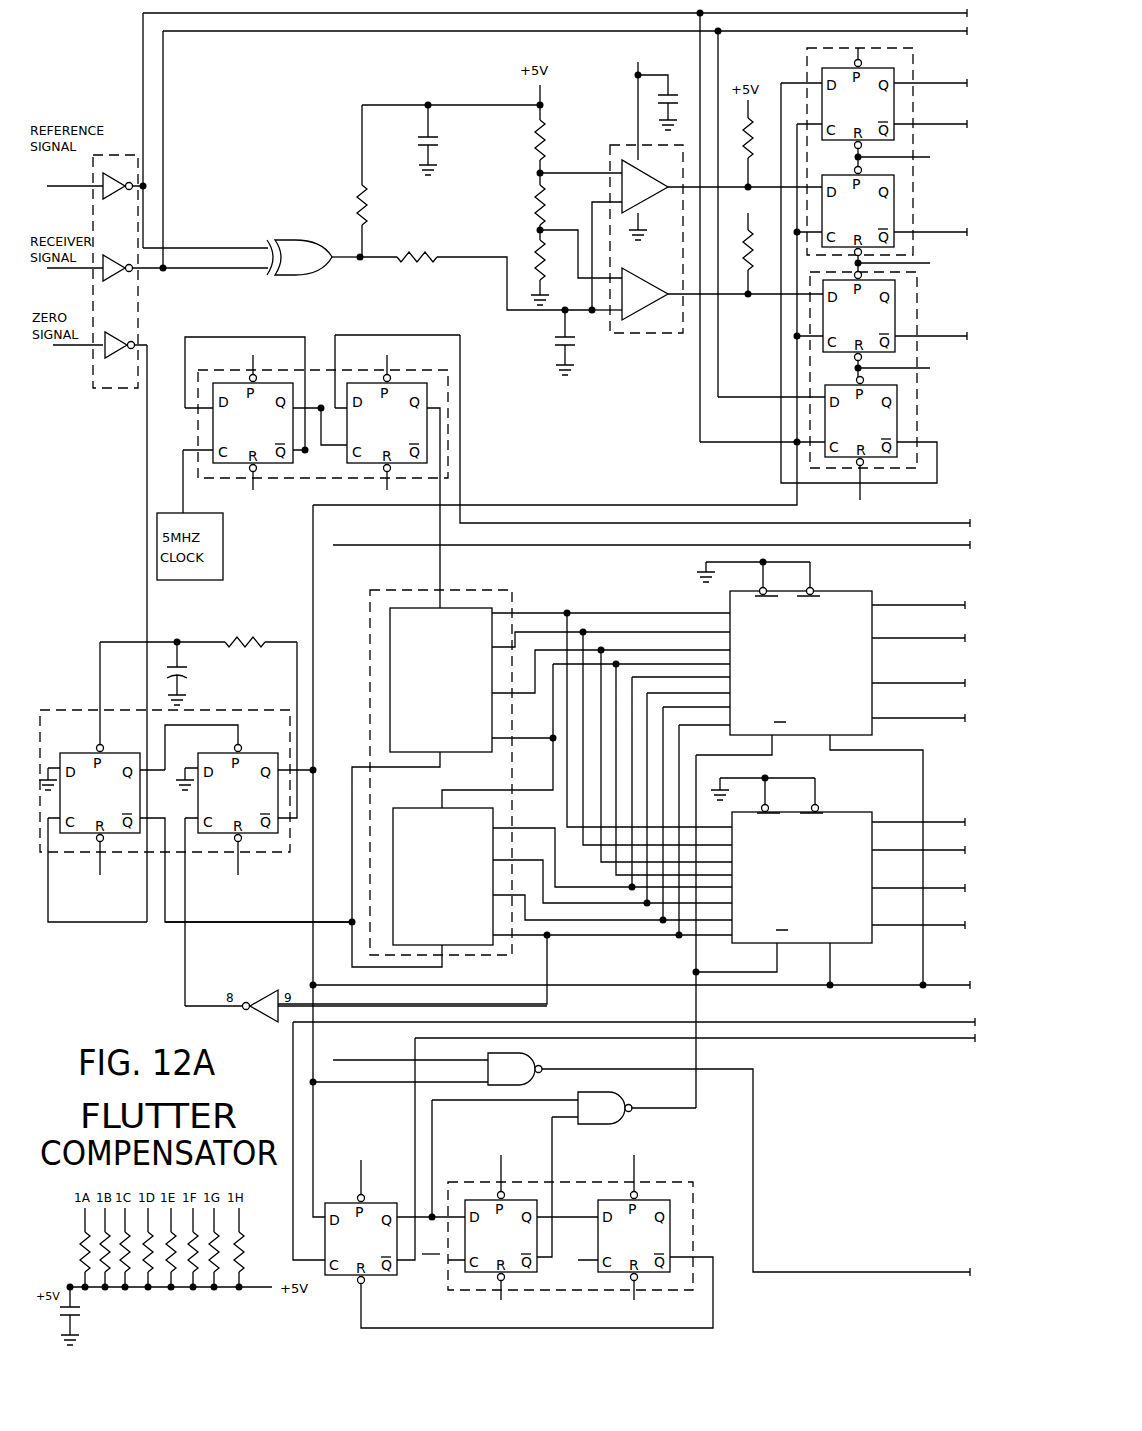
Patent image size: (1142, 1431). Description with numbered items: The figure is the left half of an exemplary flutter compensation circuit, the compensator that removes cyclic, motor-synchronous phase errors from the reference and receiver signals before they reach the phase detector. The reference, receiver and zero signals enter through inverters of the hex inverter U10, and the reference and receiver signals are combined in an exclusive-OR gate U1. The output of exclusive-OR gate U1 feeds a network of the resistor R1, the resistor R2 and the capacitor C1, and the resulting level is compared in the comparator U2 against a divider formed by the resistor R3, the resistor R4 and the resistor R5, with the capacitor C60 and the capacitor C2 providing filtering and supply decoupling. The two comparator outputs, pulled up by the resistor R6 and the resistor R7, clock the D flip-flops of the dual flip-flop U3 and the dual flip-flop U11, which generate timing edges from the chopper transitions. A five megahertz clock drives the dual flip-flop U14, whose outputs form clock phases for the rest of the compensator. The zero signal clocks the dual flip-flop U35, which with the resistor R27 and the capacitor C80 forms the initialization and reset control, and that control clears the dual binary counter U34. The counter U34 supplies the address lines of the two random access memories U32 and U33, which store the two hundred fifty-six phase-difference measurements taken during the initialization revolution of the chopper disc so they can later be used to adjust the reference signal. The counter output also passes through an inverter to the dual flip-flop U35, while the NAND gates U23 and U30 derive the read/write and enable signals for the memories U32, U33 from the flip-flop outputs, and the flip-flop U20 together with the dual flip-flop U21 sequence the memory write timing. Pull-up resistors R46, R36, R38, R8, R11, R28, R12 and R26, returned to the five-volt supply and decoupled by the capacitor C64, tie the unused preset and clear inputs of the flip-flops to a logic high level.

The IC 74LS86 U1 is at (253, 249).
The IC LM 339 U2 is at (640, 340).
The IC 74LS74 U3 is at (807, 50).
The IC 74LS04 U10 is at (95, 390).
The IC 74LS74 U11 is at (917, 430).
The IC 74LS74 U14 is at (448, 428).
The IC 74LS74 U20 is at (505, 1234).
The IC 74LS74 U21 is at (680, 1182).
The IC 74LS00 U23 is at (722, 1161).
The IC 74LS00 U30 is at (564, 1166).
The IC AM9111 DPC or 2111 A-2 256×4 RAM U32 is at (830, 772).
The IC AM9111 DPC or 2111 A-2 256×4 RAM U33 is at (830, 880).
The IC 74LS393 U34 is at (512, 600).
The IC 74LS74 U35 is at (78, 710).
The resistor R1 is at (491, 256).
The resistor R2 is at (376, 181).
The resistor R3 is at (554, 145).
The resistor R4 is at (527, 212).
The resistor R5 is at (552, 272).
The resistor R6 is at (757, 143).
The resistor R7 is at (757, 253).
The resistor R8 is at (146, 1266).
The resistor R11 is at (165, 1259).
The resistor R12 is at (209, 1259).
The resistor R26 is at (237, 1266).
The resistor R27 is at (198, 629).
The resistor R28 is at (187, 1266).
The resistor R36 is at (97, 1266).
The resistor R38 is at (122, 1259).
The resistor R46 is at (66, 1247).
The capacitor C1 is at (440, 140).
The capacitor C2 is at (663, 102).
The capacitor C60 is at (543, 342).
The capacitor C64 is at (60, 1316).
The capacitor C80 is at (190, 673).